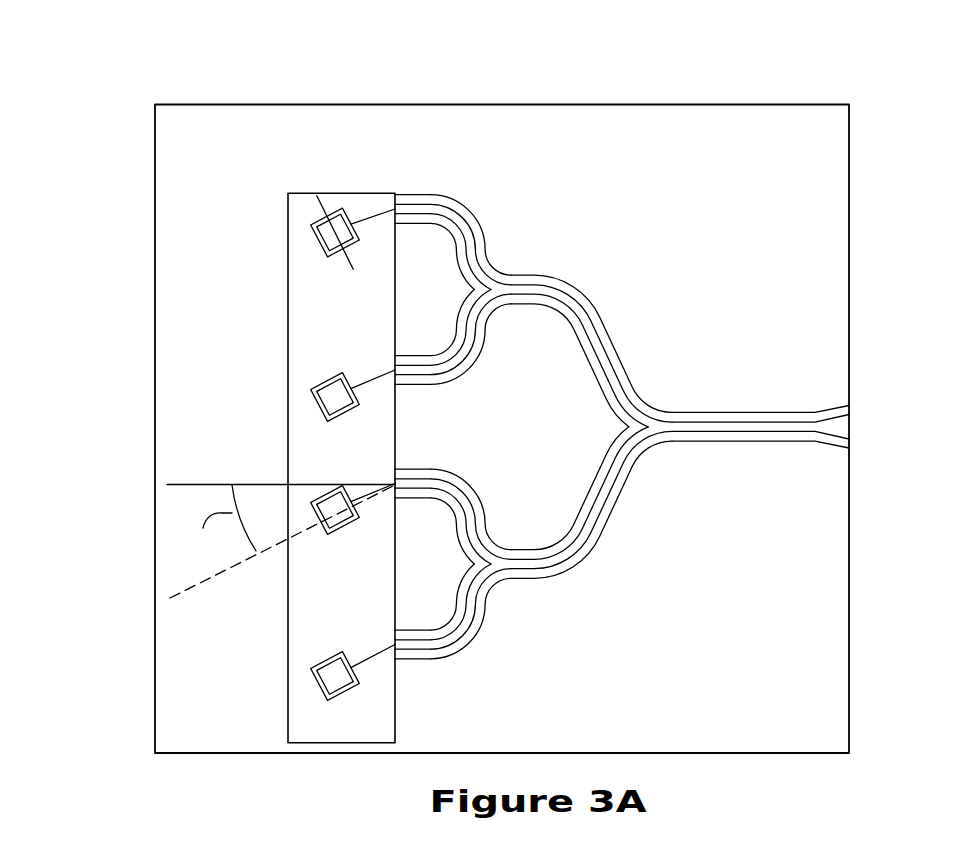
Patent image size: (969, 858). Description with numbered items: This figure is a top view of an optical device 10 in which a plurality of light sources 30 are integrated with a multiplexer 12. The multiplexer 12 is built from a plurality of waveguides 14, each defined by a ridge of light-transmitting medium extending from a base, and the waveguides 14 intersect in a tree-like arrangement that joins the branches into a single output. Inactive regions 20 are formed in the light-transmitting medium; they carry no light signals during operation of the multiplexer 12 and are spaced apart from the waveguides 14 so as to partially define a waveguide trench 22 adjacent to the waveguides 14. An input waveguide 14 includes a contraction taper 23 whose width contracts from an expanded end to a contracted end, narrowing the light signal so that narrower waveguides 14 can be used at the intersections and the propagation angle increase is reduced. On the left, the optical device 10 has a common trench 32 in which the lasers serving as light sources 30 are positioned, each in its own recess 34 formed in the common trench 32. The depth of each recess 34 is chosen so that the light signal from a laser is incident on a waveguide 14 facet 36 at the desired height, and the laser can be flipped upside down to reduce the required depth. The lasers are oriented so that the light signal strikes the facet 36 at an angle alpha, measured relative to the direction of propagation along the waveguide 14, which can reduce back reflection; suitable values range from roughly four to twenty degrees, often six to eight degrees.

The optical device 10 is at (124, 100).
The multiplexer 12 is at (610, 278).
The waveguide 14 is at (503, 564).
The inactive region 20 is at (423, 273).
The waveguide trench 22 is at (545, 304).
The contraction taper 23 is at (408, 199).
The light source 30 is at (328, 384).
The common trench 32 is at (288, 425).
The recess 34 is at (344, 390).
The facet 36 is at (405, 648).